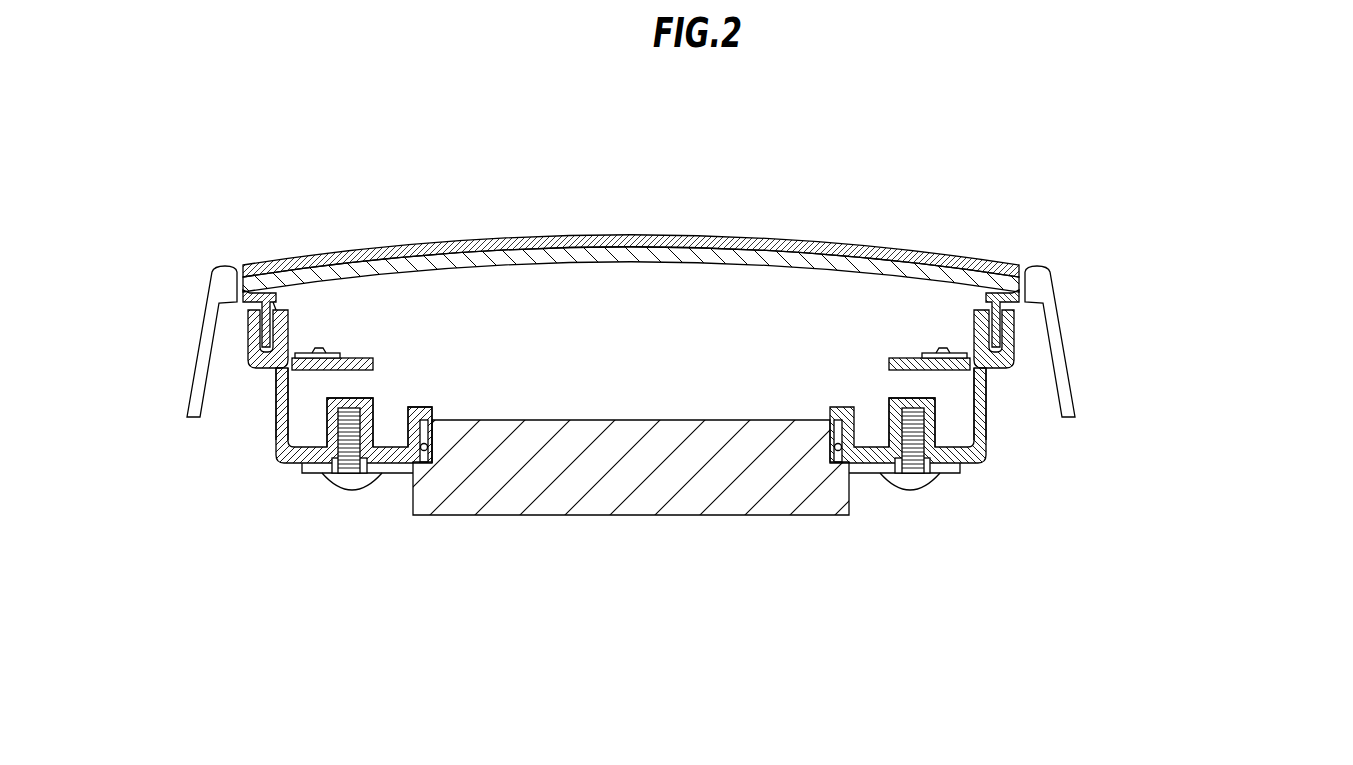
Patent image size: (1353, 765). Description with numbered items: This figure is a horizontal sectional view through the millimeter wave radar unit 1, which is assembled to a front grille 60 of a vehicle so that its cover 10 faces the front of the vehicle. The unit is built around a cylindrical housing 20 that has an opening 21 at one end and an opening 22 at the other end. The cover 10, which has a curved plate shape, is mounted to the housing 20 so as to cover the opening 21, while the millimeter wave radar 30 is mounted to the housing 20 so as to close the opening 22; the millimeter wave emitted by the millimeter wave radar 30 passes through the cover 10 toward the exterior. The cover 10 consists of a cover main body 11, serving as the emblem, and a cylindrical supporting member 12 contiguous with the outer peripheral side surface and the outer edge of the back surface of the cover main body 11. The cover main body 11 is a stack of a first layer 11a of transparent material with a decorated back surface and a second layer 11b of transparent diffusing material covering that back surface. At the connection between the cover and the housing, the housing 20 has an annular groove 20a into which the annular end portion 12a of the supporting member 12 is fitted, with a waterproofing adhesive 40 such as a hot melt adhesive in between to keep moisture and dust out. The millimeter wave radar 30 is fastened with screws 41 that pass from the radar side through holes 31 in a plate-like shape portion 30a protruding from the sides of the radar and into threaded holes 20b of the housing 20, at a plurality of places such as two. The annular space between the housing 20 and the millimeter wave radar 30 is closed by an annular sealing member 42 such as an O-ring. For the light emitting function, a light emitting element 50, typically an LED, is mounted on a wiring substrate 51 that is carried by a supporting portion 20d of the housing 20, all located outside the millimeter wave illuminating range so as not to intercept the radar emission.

The millimeter wave radar unit 1 is at (797, 166).
The cover 10 is at (912, 239).
The cover main body 11 is at (700, 168).
The first layer 11a is at (627, 241).
The second layer 11b is at (661, 256).
The supporting member 12 is at (247, 301).
The end portion 12a is at (257, 338).
The housing 20 is at (282, 460).
The annular groove 20a is at (283, 337).
The threaded hole 20b is at (374, 415).
The supporting portion 20d is at (315, 368).
The opening 21 is at (275, 300).
The opening 22 is at (434, 419).
The millimeter wave radar 30 is at (605, 516).
The plate-like shape portion 30a is at (318, 470).
The hole 31 is at (368, 468).
The waterproofing adhesive 40 is at (268, 357).
The screw 41 is at (352, 478).
The annular sealing member 42 is at (424, 452).
The light emitting element 50 is at (321, 348).
The wiring substrate 51 is at (341, 357).
The front grille 60 is at (196, 398).